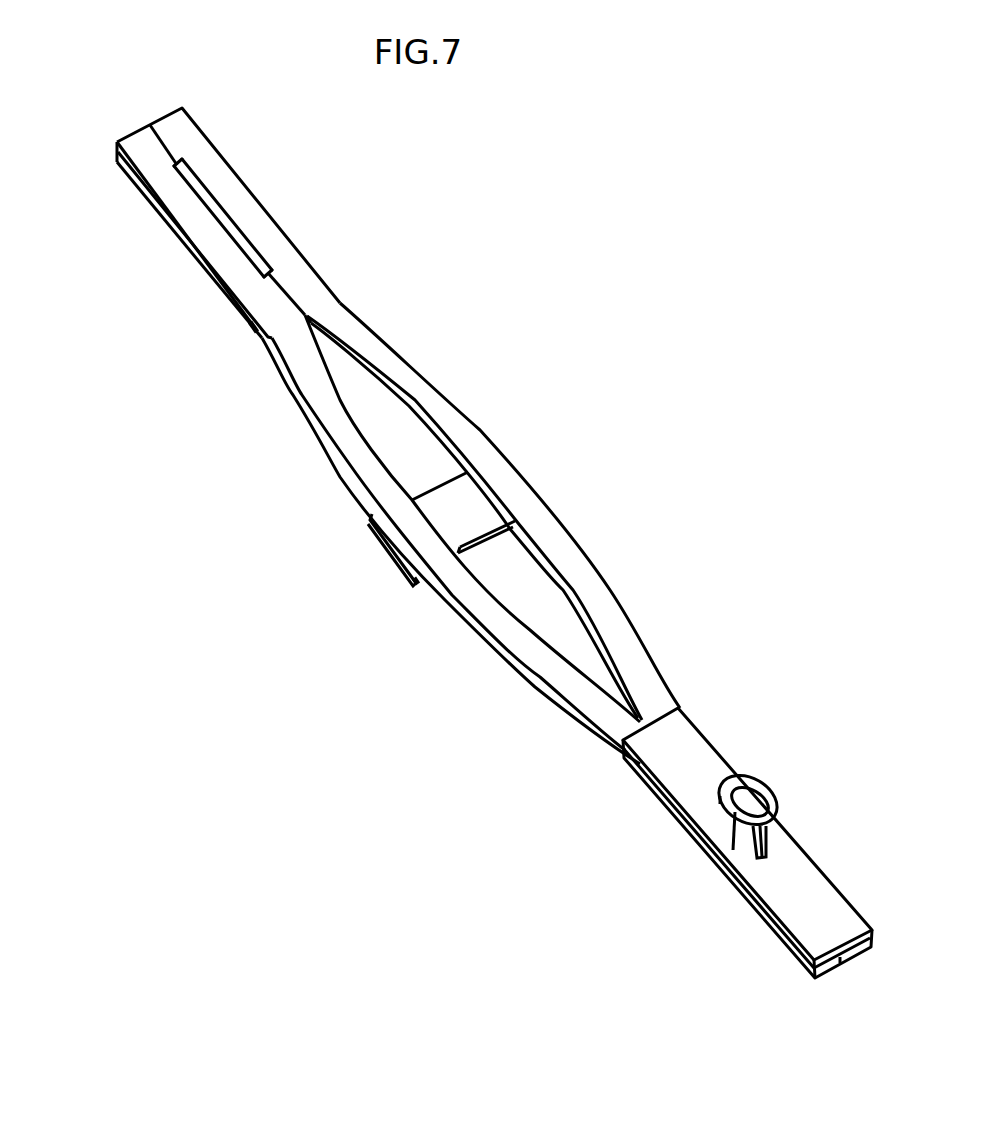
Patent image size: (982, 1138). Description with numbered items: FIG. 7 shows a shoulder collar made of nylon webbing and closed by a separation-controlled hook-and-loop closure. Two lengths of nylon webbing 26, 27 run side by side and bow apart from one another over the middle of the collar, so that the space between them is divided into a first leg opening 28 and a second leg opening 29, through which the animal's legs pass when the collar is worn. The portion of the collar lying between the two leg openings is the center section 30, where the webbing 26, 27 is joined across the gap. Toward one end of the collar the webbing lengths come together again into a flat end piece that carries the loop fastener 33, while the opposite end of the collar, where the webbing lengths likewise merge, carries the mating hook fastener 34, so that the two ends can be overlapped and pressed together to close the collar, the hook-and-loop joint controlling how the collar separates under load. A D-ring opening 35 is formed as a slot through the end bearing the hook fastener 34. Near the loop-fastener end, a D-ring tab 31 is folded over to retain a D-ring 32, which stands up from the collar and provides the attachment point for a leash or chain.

The nylon webbing 26 is at (370, 320).
The nylon webbing 27 is at (277, 377).
The leg opening 28 is at (372, 400).
The leg opening 29 is at (515, 575).
The center section 30 is at (395, 550).
The D-ring tab 31 is at (738, 815).
The D-ring 32 is at (745, 775).
The loop fastener 33 is at (668, 748).
The hook fastener 34 is at (197, 262).
The D-ring opening 35 is at (225, 203).